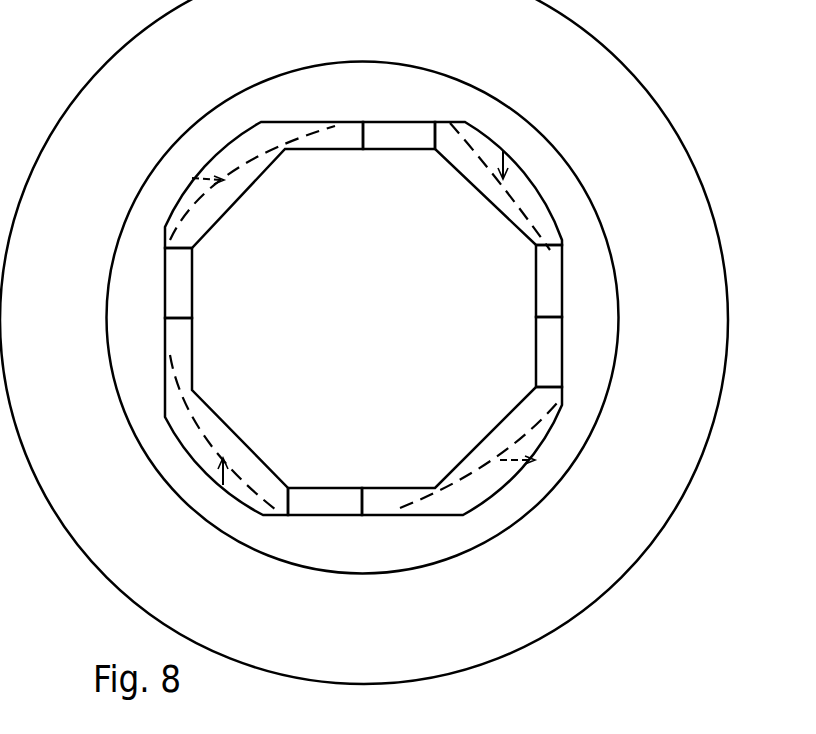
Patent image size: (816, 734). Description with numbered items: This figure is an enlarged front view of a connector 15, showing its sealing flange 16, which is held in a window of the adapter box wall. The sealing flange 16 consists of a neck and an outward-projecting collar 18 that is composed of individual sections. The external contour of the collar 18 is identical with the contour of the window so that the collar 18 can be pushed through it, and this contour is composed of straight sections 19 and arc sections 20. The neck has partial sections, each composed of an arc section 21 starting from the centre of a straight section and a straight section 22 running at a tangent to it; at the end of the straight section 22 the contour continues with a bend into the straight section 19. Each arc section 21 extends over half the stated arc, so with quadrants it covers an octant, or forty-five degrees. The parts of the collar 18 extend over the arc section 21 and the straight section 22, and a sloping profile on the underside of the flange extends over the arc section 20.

The connector 15 is at (672, 493).
The sealing flange 16 is at (497, 500).
The collar 18 is at (203, 450).
The straight section 19 is at (390, 122).
The arc section 20 is at (532, 170).
The arc section 21 is at (272, 143).
The straight section 22 is at (183, 218).